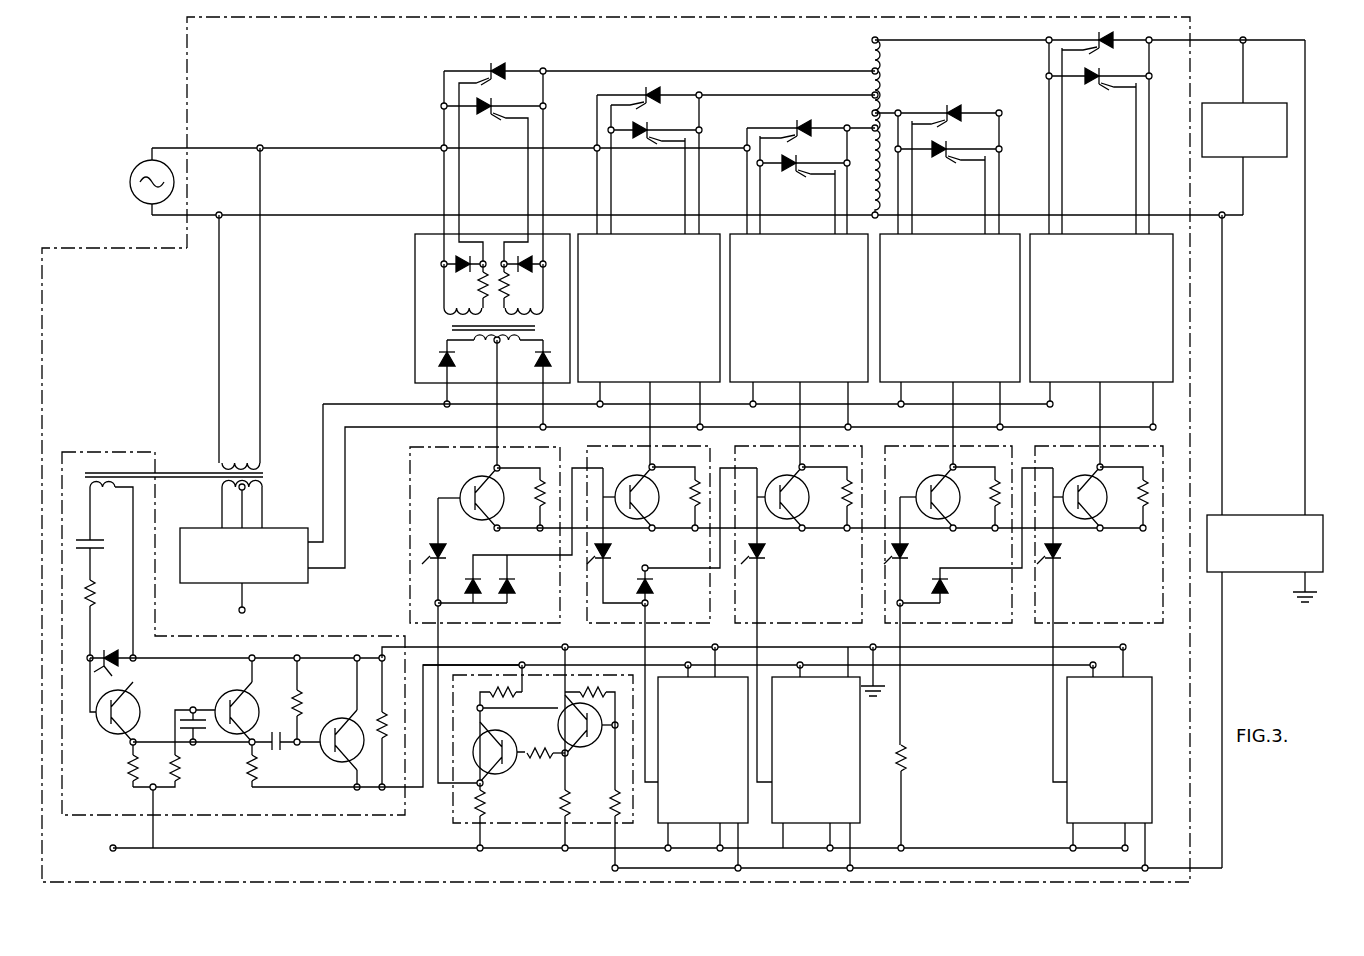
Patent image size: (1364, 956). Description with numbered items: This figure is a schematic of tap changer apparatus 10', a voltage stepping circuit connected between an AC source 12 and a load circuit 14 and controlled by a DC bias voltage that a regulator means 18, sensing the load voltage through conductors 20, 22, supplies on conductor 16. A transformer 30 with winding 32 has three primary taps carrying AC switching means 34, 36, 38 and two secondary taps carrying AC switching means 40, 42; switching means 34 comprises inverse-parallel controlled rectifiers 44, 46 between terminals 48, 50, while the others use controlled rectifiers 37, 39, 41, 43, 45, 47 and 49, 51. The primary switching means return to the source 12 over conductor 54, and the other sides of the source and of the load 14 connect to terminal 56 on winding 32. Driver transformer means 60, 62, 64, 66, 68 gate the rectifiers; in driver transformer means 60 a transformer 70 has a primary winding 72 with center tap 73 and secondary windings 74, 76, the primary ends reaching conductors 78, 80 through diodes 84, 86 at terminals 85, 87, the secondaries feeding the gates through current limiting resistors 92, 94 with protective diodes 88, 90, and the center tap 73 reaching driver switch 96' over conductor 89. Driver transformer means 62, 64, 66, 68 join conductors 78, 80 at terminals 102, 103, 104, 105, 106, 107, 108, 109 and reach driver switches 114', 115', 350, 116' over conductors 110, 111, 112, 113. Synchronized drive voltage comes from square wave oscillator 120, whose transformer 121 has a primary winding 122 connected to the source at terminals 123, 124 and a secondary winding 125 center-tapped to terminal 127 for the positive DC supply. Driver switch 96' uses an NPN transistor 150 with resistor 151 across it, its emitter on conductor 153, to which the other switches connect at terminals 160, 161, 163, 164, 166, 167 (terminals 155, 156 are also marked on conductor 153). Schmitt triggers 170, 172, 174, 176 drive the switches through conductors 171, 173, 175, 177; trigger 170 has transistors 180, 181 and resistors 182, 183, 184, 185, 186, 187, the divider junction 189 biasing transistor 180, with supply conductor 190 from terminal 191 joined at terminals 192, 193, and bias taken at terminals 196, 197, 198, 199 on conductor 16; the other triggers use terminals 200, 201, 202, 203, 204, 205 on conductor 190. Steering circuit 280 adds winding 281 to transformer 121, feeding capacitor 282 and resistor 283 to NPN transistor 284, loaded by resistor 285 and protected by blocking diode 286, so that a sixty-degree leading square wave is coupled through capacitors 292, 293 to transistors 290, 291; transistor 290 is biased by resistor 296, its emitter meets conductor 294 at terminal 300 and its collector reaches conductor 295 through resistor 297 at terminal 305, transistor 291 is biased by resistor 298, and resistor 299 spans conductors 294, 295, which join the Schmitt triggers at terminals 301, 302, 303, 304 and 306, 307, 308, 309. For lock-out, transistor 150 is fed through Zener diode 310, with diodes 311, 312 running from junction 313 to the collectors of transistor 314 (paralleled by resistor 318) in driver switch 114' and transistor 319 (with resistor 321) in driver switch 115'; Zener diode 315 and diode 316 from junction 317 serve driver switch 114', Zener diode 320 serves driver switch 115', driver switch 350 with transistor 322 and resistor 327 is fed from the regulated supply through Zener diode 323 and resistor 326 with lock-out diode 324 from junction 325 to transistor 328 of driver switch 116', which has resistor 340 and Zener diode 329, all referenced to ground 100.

The tap changer apparatus 10' is at (616, 449).
The source of AC potential 12 is at (135, 172).
The load circuit 14 is at (1232, 102).
The conductor 16 is at (1225, 866).
The regulator means 18 is at (1308, 514).
The conductor 20 is at (1226, 258).
The conductor 22 is at (1307, 258).
The transformer 30 is at (861, 36).
The winding 32 is at (870, 135).
The AC switching means 34 is at (543, 91).
The AC switching means 36 is at (690, 118).
The silicon controlled rectifier 37 is at (648, 90).
The AC switching means 38 is at (852, 145).
The silicon controlled rectifier 39 is at (640, 124).
The AC switching means 40 is at (985, 133).
The silicon controlled rectifier 41 is at (800, 120).
The AC switching means 42 is at (1148, 65).
The silicon controlled rectifier 43 is at (787, 157).
The silicon controlled rectifier 44 is at (494, 63).
The controlled rectifier 45 is at (950, 108).
The silicon controlled rectifier 46 is at (476, 101).
The controlled rectifier 47 is at (936, 142).
The terminal 48 is at (441, 106).
The controlled rectifier 49 is at (1097, 36).
The terminal 50 is at (545, 70).
The controlled rectifier 51 is at (1089, 70).
The conductor 54 is at (333, 148).
The terminal 56 is at (872, 208).
The driver transformer means 60 is at (415, 383).
The driver transformer means 62 is at (588, 383).
The driver transformer means 64 is at (742, 383).
The driver transformer means 66 is at (892, 383).
The driver transformer means 68 is at (1042, 383).
The transformer 70 is at (446, 343).
The primary winding 72 is at (525, 338).
The center tap 73 is at (500, 343).
The secondary winding 74 is at (442, 312).
The secondary winding 76 is at (541, 310).
The conductor 78 is at (320, 404).
The conductor 80 is at (334, 404).
The diode 84 is at (455, 362).
The terminal 85 is at (443, 407).
The diode 86 is at (535, 362).
The terminal 87 is at (540, 425).
The diode 88 is at (455, 258).
The conductor 89 is at (493, 420).
The diode 90 is at (533, 259).
The current limiting resistor 92 is at (480, 288).
The current limiting resistor 94 is at (508, 288).
The driver switch 96' is at (485, 545).
The ground 100 is at (885, 695).
The terminal 102 is at (597, 406).
The terminal 103 is at (698, 425).
The terminal 104 is at (752, 406).
The terminal 105 is at (846, 425).
The terminal 106 is at (900, 406).
The terminal 107 is at (998, 425).
The terminal 108 is at (1048, 406).
The terminal 109 is at (1151, 425).
The conductor 110 is at (648, 420).
The conductor 111 is at (798, 416).
The conductor 112 is at (951, 416).
The conductor 113 is at (1098, 416).
The driver switch 114' is at (648, 545).
The driver switch 115' is at (798, 545).
The driver switch 116' is at (1099, 545).
The square wave oscillator 120 is at (210, 584).
The transformer 121 is at (296, 481).
The primary winding 122 is at (220, 458).
The terminal 123 is at (228, 203).
The terminal 124 is at (262, 146).
The secondary winding 125 is at (218, 484).
The terminal 127 is at (246, 610).
The NPN transistor 150 is at (466, 484).
The resistor 151 is at (536, 496).
The conductor 153 is at (962, 532).
The junction 155 is at (500, 532).
The junction 156 is at (540, 532).
The terminal 160 is at (650, 533).
The terminal 161 is at (696, 533).
The terminal 163 is at (768, 565).
The terminal 164 is at (847, 533).
The terminal 166 is at (1100, 533).
The terminal 167 is at (1143, 533).
The Schmitt trigger 170 is at (464, 824).
The conductor 171 is at (438, 655).
The Schmitt trigger 172 is at (670, 824).
The conductor 173 is at (645, 657).
The Schmitt trigger 174 is at (856, 824).
The conductor 175 is at (757, 661).
The Schmitt trigger 176 is at (1066, 820).
The conductor 177 is at (1051, 659).
The NPN transistor 180 is at (560, 734).
The NPN transistor 181 is at (516, 736).
The resistor 182 is at (612, 808).
The resistor 183 is at (588, 690).
The resistor 184 is at (560, 808).
The resistor 185 is at (548, 770).
The resistor 186 is at (484, 804).
The resistor 187 is at (494, 690).
The junction 189 is at (568, 758).
The conductor 190 is at (333, 845).
The terminal 191 is at (113, 852).
The terminal 192 is at (563, 851).
The terminal 193 is at (477, 851).
The terminal 196 is at (612, 869).
The terminal 197 is at (740, 868).
The terminal 198 is at (853, 868).
The terminal 199 is at (1147, 866).
The terminal 200 is at (670, 852).
The terminal 201 is at (721, 852).
The terminal 202 is at (784, 845).
The terminal 203 is at (830, 851).
The terminal 204 is at (1071, 851).
The terminal 205 is at (1124, 852).
The steering circuit 280 is at (232, 815).
The winding 281 is at (115, 490).
The capacitor 282 is at (102, 550).
The resistor 283 is at (97, 595).
The NPN transistor 284 is at (118, 738).
The resistor 285 is at (128, 775).
The blocking diode 286 is at (116, 650).
The NPN transistor 290 is at (255, 700).
The NPN transistor 291 is at (282, 748).
The coupling capacitor 292 is at (178, 708).
The coupling capacitor 293 is at (258, 762).
The conductor 294 is at (204, 656).
The conductor 295 is at (970, 666).
The resistor 296 is at (178, 782).
The resistor 297 is at (245, 748).
The resistor 298 is at (300, 706).
The resistor 299 is at (378, 712).
The terminal 300 is at (252, 655).
The terminal 301 is at (568, 650).
The terminal 302 is at (717, 651).
The terminal 303 is at (870, 650).
The terminal 304 is at (1127, 650).
The terminal 305 is at (257, 790).
The terminal 306 is at (518, 662).
The terminal 307 is at (690, 663).
The terminal 308 is at (802, 663).
The terminal 309 is at (1095, 663).
The Zener diode 310 is at (446, 550).
The diode 311 is at (470, 588).
The diode 312 is at (517, 584).
The junction 313 is at (442, 606).
The NPN transistor 314 is at (692, 500).
The Zener diode 315 is at (618, 562).
The diode 316 is at (656, 586).
The junction 317 is at (650, 604).
The resistor 318 is at (680, 492).
The NPN transistor 319 is at (770, 486).
The Zener diode 320 is at (765, 562).
The resistor 321 is at (845, 490).
The NPN transistor 322 is at (918, 490).
The Zener diode 323 is at (912, 558).
The lock-out diode 324 is at (950, 584).
The junction 325 is at (908, 606).
The resistor 326 is at (908, 760).
The resistor 327 is at (992, 497).
The NPN transistor 328 is at (1141, 504).
The Zener diode 329 is at (1066, 562).
The resistor 340 is at (1096, 486).
The driver switch 350 is at (968, 624).